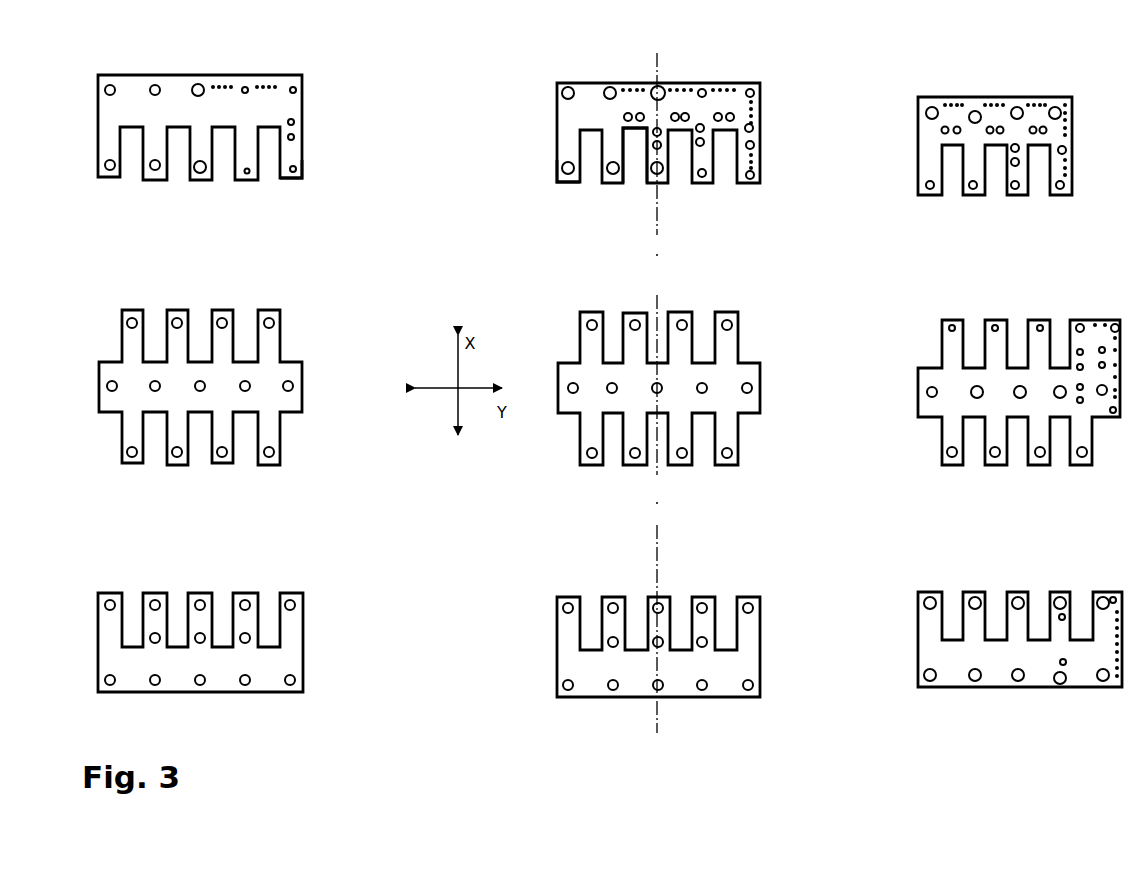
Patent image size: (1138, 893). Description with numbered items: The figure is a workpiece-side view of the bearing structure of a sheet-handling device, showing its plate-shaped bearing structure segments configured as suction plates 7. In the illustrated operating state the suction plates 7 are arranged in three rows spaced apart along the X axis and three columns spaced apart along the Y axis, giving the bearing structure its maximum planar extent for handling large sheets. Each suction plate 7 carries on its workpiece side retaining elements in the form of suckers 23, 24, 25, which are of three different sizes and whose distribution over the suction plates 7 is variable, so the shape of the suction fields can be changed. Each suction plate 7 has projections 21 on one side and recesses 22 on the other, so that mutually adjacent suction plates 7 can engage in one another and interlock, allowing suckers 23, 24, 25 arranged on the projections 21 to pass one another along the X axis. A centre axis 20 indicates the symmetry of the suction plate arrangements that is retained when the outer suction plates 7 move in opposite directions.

The suction plate 7 is at (310, 85).
The centre axis 20 is at (658, 530).
The projection 21 is at (557, 176).
The recess 22 is at (637, 160).
The sucker 23 is at (202, 174).
The sucker 24 is at (298, 178).
The sucker 25 is at (213, 83).